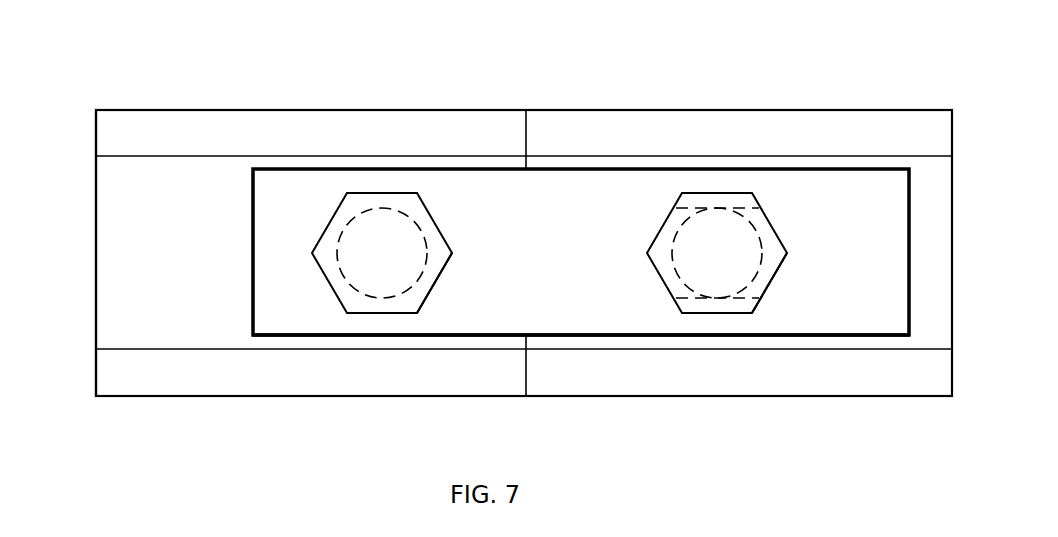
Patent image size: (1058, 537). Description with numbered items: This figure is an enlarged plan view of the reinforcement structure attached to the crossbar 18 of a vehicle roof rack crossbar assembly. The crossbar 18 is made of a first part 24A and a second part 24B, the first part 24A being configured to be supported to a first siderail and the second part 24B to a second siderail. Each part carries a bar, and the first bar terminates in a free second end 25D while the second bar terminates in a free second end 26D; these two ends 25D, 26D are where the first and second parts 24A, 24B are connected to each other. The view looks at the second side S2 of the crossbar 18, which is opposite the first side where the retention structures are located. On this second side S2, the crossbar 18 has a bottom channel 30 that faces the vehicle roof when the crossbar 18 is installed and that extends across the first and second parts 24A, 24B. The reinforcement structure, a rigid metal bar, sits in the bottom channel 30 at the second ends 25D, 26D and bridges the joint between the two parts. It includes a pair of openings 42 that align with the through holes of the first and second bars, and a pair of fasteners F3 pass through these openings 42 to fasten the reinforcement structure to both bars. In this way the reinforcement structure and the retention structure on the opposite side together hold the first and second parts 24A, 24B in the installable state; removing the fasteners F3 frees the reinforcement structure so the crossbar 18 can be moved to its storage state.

The crossbar 18 is at (687, 60).
The second side S2 is at (78, 150).
The bottom channel 30 is at (171, 220).
The first part 24A is at (186, 399).
The second part 24B is at (802, 399).
The second end of the first bar 25D is at (420, 397).
The second end of the second bar 26D is at (632, 397).
The openings 42 is at (352, 222).
The fasteners F3 is at (440, 277).